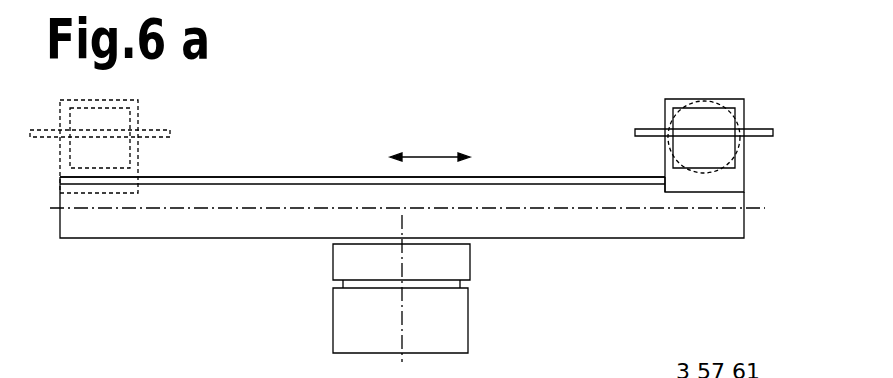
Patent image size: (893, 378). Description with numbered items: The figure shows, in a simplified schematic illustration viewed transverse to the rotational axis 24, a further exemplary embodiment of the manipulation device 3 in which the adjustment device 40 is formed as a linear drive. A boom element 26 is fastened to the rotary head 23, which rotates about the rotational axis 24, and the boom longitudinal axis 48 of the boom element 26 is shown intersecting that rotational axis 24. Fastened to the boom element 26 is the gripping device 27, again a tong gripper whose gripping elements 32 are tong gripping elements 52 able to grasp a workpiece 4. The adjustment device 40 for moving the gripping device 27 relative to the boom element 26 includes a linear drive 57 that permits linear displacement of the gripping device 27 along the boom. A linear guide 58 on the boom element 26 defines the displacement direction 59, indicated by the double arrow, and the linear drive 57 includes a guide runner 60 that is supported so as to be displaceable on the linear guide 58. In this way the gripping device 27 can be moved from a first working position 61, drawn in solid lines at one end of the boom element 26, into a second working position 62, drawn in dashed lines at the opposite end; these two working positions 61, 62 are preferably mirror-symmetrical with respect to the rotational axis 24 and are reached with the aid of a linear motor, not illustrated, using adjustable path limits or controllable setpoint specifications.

The manipulation device 3 is at (398, 106).
The workpiece 4 is at (762, 132).
The rotary head 23 is at (347, 320).
The rotational axis 24 is at (404, 314).
The boom element 26 is at (590, 222).
The gripping device 27 is at (732, 108).
The gripping elements 32 is at (780, 95).
The tong gripping elements 52 is at (780, 95).
The adjustment device 40 is at (587, 118).
The linear drive 57 is at (641, 161).
The boom longitudinal axis 48 is at (243, 208).
The linear guide 58 is at (555, 178).
The displacement direction 59 is at (428, 155).
The guide runner 60 is at (735, 182).
The first working position 61 is at (700, 95).
The second working position 62 is at (162, 88).